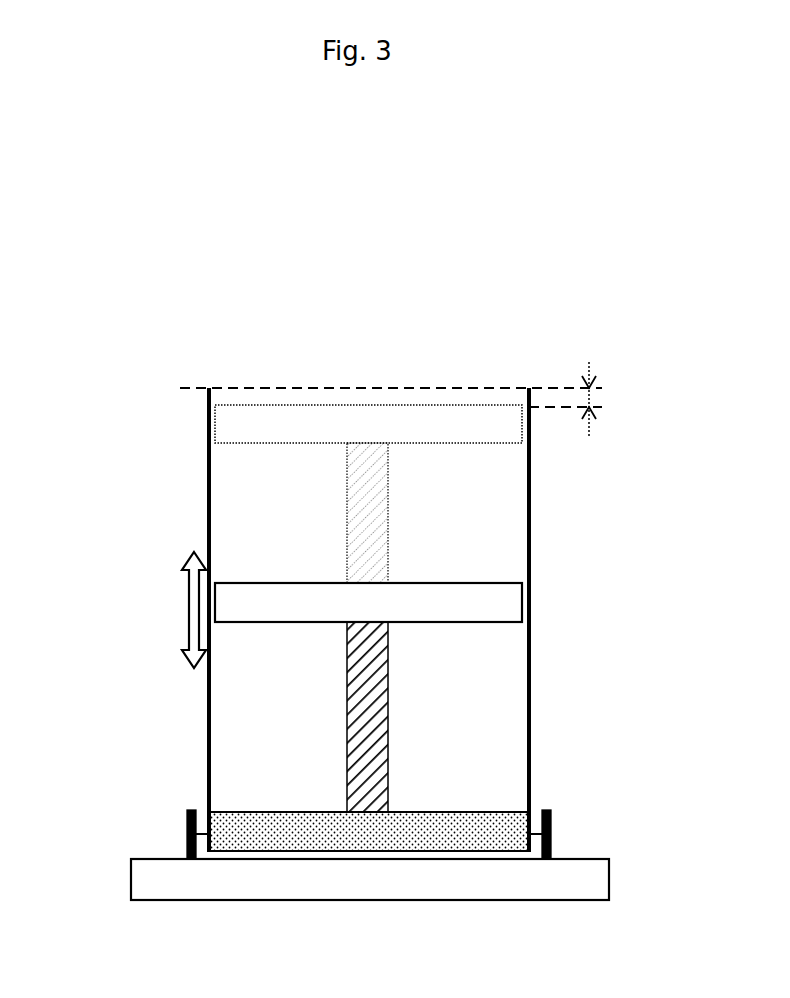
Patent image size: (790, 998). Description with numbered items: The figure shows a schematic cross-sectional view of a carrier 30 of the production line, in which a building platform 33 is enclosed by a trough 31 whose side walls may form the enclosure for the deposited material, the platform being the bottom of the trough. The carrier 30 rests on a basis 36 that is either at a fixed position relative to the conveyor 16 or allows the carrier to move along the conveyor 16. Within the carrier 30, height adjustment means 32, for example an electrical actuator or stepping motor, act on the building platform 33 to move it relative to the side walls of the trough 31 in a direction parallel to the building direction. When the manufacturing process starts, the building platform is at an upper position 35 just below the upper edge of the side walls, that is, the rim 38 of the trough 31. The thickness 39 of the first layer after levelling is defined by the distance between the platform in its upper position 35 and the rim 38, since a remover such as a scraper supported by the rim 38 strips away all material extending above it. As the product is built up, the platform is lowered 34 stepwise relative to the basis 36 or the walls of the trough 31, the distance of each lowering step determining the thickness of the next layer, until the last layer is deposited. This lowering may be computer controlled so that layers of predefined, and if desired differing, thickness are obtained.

The carrier 30 is at (136, 214).
The trough 31 is at (204, 492).
The height adjustment means 32 is at (391, 692).
The building platform 33 is at (461, 579).
The lowering of the platform 34 is at (185, 605).
The upper position of the building platform 35 is at (402, 402).
The basis 36 is at (222, 808).
The rim of the trough 38 is at (207, 383).
The thickness of the first layer 39 is at (595, 397).
The conveyor 16 is at (127, 875).